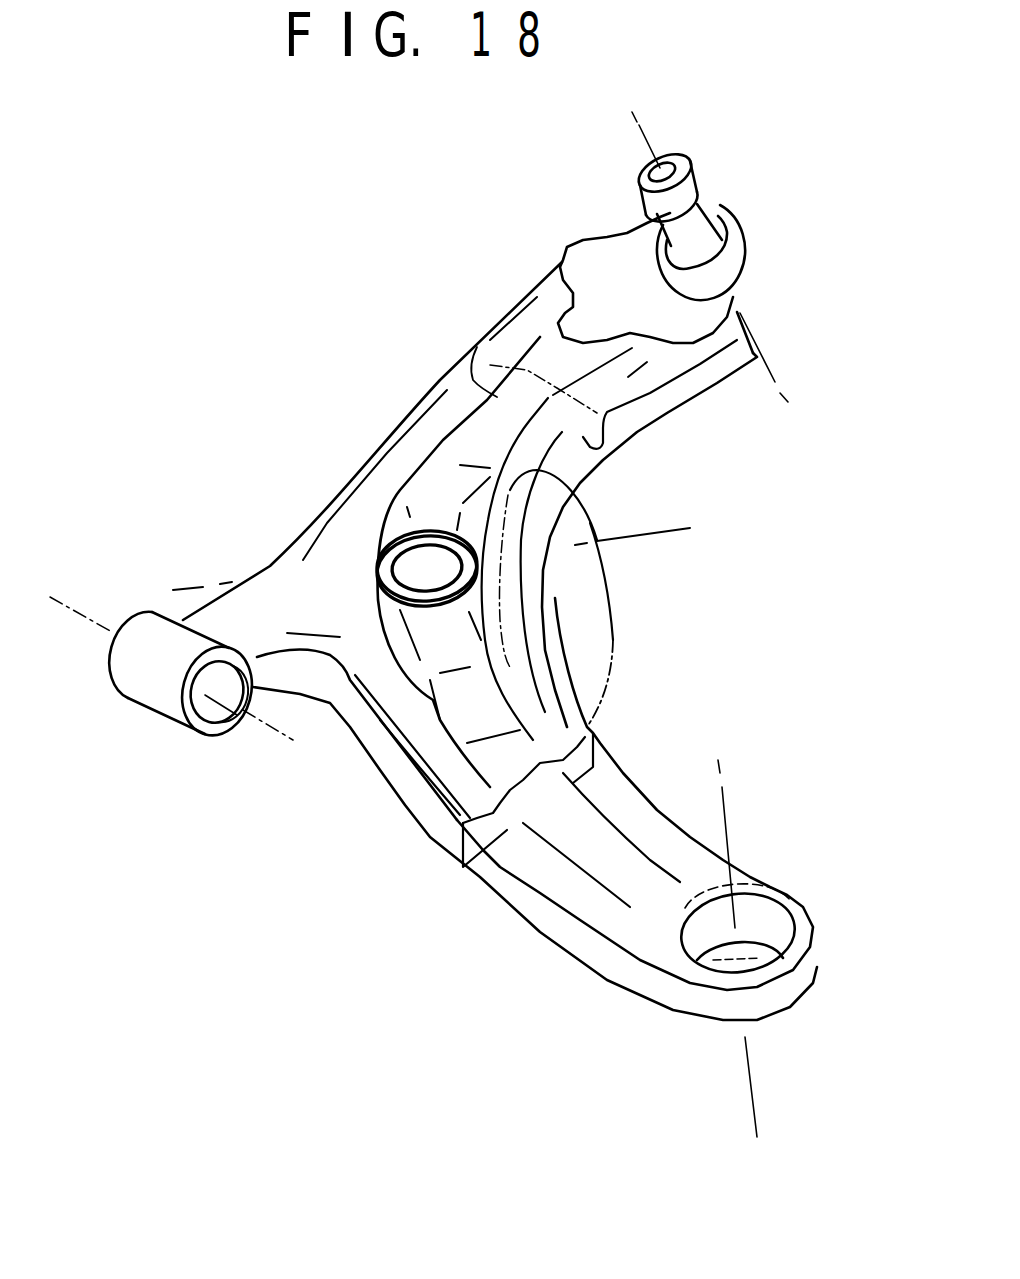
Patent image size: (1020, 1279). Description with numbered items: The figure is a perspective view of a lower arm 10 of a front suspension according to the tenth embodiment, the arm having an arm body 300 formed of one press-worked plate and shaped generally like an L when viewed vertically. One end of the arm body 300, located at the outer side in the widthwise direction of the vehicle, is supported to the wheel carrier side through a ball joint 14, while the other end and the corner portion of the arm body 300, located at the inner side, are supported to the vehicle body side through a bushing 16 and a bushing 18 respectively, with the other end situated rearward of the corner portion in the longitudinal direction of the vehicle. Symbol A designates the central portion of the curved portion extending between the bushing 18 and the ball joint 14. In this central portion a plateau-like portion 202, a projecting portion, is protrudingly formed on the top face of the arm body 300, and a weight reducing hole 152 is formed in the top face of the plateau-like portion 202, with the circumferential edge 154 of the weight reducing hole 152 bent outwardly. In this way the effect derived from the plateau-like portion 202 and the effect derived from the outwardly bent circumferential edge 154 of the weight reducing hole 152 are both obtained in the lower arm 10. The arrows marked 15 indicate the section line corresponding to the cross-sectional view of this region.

The lower arm 10 is at (392, 843).
The ball joint 14 is at (732, 263).
The section line 15- 15 is at (173, 590).
The bushing 16 is at (220, 690).
The bushing 18 is at (785, 897).
The weight reducing hole 152 is at (422, 565).
The circumferential edge 154 is at (433, 533).
The plateau-like portion 202 is at (437, 634).
The arm body 300 is at (371, 748).
The central portion A is at (610, 587).